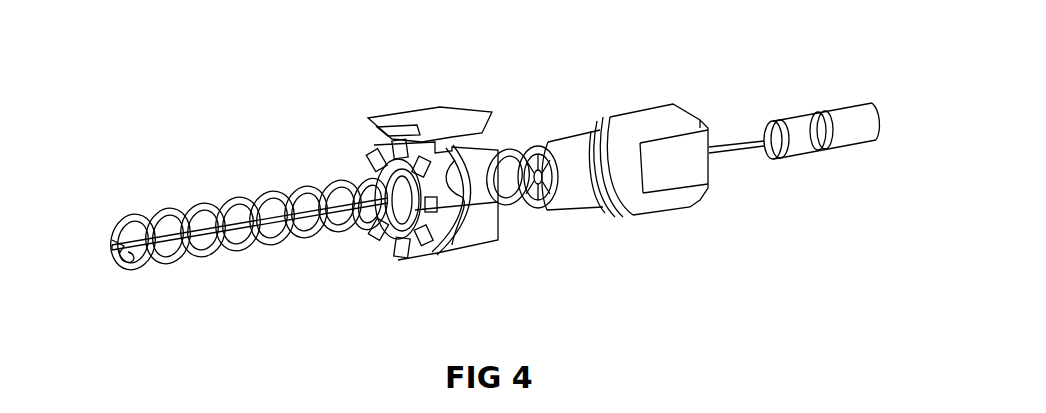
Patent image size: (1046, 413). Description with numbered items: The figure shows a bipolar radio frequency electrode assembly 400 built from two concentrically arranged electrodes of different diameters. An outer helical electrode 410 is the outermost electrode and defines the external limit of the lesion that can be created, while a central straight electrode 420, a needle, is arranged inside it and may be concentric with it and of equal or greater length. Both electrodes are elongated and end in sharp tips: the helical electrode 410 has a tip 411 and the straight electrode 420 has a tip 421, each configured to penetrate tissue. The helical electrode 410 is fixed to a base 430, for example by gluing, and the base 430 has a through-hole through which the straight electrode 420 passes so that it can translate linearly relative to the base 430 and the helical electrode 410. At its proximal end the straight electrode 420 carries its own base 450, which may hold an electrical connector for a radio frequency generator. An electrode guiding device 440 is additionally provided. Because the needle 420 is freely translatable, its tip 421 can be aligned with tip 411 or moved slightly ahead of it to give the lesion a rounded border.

The electrode assembly 400 is at (278, 68).
The helical electrode 410 is at (170, 215).
The tip 411 is at (126, 258).
The straight electrode 420 is at (137, 247).
The tip 421 is at (112, 243).
The base 430 is at (658, 208).
The electrode guiding device 440 is at (412, 110).
The base 450 is at (840, 108).